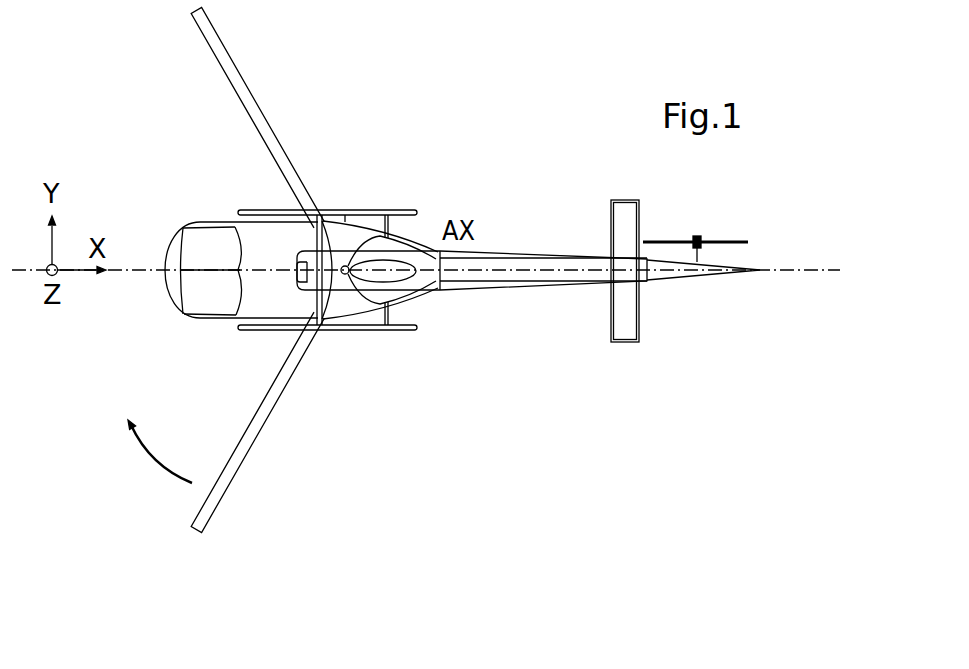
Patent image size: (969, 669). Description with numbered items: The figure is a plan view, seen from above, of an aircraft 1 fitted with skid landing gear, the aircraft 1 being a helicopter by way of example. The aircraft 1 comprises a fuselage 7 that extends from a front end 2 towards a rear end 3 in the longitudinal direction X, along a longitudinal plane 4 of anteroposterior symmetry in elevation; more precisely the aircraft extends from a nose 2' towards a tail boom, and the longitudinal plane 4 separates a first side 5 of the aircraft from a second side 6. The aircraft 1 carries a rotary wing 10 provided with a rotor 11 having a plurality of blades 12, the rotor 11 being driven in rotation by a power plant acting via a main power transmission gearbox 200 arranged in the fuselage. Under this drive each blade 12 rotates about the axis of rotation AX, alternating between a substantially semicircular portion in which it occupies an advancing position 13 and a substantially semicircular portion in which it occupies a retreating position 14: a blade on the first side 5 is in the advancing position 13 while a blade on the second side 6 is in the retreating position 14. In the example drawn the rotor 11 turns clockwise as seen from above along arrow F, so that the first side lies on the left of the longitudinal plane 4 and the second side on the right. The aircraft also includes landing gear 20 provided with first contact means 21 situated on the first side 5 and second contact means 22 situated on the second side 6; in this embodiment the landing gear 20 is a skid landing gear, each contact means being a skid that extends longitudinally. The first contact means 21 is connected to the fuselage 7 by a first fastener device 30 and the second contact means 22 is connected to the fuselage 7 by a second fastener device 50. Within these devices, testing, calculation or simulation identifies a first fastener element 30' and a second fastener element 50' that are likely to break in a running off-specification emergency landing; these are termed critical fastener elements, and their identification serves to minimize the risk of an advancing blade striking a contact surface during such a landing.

The aircraft 1 is at (503, 62).
The front end 2 is at (211, 231).
The nose 2' is at (163, 298).
The rear end 3 is at (784, 228).
The longitudinal plane 4 is at (798, 272).
The first side 5 is at (520, 320).
The second side 6 is at (503, 200).
The fuselage 7 is at (258, 211).
The rotary wing 10 is at (330, 375).
The rotor 11 is at (357, 232).
The blade 12 is at (220, 57).
The advancing position 13 is at (118, 463).
The retreating position 14 is at (173, 57).
The landing gear 20 is at (430, 172).
The first contact means 21 is at (355, 330).
The second contact means 22 is at (347, 213).
The first fastener device 30 is at (402, 328).
The first fastener element 30' is at (419, 361).
The second fastener device 50 is at (411, 203).
The second fastener element 50' is at (388, 176).
The main power transmission gearbox 200 is at (300, 302).